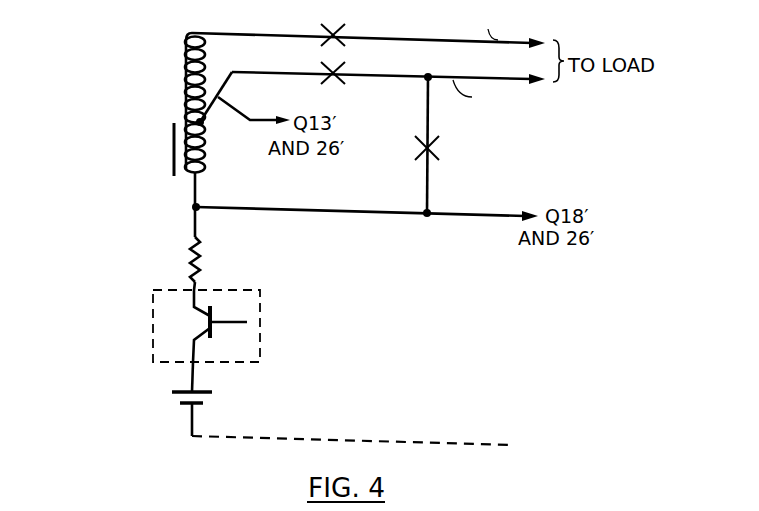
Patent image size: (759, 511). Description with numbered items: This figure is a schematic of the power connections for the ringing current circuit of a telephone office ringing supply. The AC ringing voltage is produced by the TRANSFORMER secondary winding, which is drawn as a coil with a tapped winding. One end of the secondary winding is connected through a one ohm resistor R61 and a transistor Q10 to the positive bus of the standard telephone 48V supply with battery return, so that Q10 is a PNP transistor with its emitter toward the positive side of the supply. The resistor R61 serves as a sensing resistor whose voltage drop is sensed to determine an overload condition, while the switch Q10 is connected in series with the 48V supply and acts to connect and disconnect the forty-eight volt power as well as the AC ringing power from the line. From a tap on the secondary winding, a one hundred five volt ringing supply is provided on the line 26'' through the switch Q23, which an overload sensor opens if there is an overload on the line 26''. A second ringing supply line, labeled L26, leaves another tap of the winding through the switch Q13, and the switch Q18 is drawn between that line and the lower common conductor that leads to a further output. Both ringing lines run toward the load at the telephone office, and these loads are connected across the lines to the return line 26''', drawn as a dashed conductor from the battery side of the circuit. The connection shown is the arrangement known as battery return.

The transformer secondary winding TRANSFORMER is at (108, 104).
The switch Q23 is at (368, 29).
The SCR switch Q13 in output line L26 Q13 is at (370, 94).
The SCR switch Q18 is at (448, 145).
The line 26'' is at (480, 26).
The output line L26 is at (481, 93).
The one ohm resistor R61 is at (205, 250).
The transistor Q10 is at (206, 322).
The 48 V supply 48V is at (206, 399).
The line 26''' is at (352, 427).